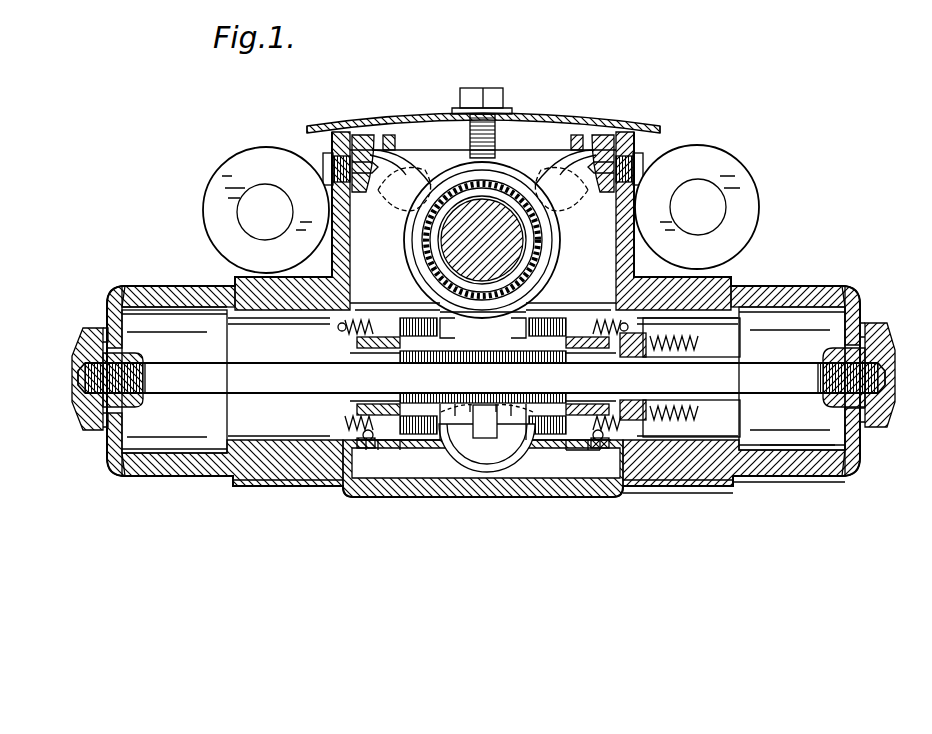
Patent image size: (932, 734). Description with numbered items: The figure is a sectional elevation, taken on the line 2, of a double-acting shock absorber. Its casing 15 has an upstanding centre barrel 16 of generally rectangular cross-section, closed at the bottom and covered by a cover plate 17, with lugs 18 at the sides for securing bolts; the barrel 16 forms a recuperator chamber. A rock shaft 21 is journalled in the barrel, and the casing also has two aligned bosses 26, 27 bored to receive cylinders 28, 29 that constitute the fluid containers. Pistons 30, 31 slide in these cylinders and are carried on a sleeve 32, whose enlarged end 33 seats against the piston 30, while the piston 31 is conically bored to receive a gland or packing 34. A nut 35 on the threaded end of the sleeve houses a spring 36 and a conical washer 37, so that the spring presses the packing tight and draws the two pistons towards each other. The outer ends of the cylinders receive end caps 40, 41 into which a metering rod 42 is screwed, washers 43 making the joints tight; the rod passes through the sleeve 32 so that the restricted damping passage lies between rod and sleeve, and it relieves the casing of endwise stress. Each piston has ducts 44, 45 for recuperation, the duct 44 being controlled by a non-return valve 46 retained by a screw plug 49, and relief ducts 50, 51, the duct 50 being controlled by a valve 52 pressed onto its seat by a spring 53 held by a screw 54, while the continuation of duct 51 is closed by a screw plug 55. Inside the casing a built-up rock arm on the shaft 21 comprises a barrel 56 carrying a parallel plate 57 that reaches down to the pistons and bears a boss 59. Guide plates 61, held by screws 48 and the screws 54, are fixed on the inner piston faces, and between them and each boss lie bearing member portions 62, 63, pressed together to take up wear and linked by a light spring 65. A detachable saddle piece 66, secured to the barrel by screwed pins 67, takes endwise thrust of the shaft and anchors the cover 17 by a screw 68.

The section line 2- 2 is at (483, 95).
The casing 15 is at (572, 452).
The centre barrel 16 is at (637, 203).
The cover plate 17 is at (532, 114).
The lugs 18 is at (232, 178).
The rock shaft 21 is at (525, 238).
The boss 26 is at (257, 478).
The boss 27 is at (732, 480).
The cylinder 28 is at (137, 476).
The cylinder 29 is at (822, 462).
The piston 30 is at (208, 474).
The piston 31 is at (742, 462).
The sleeve 32 is at (405, 448).
The enlarged end 33 is at (320, 358).
The gland or packing 34 is at (662, 478).
The nut 35 is at (702, 404).
The spring 36 is at (742, 342).
The conical washer 37 is at (703, 342).
The end cap 40 is at (85, 372).
The end cap 41 is at (878, 398).
The metering rod 42 is at (145, 398).
The washers 43 is at (104, 328).
The duct 44 is at (360, 456).
The duct 45 is at (312, 458).
The non-return valve 46 is at (368, 450).
The screws 48 is at (380, 452).
The screw plug 49 is at (420, 363).
The relief duct 50 is at (322, 328).
The relief duct 51 is at (364, 315).
The valve 52 is at (320, 296).
The spring 53 is at (388, 300).
The screw 54 is at (460, 330).
The screw plug 55 is at (352, 363).
The barrel 56 is at (520, 222).
The plate 57 is at (402, 206).
The bosses 59 is at (487, 438).
The guide plates 61 is at (446, 470).
The bearing member portion 62 is at (462, 470).
The bearing member portion 63 is at (523, 470).
The light spring 65 is at (508, 470).
The saddle piece 66 is at (593, 135).
The screwed pins 67 is at (333, 152).
The screw 68 is at (462, 98).